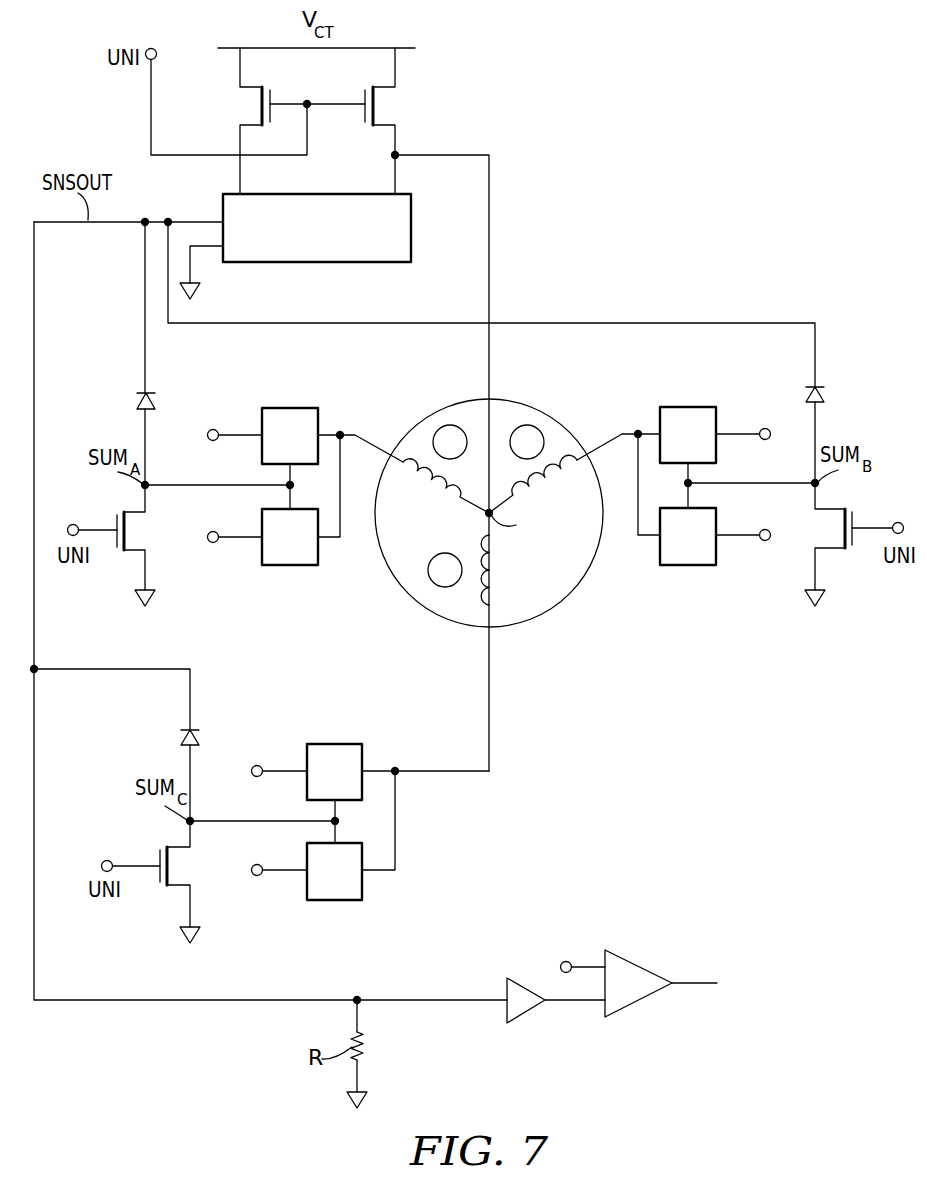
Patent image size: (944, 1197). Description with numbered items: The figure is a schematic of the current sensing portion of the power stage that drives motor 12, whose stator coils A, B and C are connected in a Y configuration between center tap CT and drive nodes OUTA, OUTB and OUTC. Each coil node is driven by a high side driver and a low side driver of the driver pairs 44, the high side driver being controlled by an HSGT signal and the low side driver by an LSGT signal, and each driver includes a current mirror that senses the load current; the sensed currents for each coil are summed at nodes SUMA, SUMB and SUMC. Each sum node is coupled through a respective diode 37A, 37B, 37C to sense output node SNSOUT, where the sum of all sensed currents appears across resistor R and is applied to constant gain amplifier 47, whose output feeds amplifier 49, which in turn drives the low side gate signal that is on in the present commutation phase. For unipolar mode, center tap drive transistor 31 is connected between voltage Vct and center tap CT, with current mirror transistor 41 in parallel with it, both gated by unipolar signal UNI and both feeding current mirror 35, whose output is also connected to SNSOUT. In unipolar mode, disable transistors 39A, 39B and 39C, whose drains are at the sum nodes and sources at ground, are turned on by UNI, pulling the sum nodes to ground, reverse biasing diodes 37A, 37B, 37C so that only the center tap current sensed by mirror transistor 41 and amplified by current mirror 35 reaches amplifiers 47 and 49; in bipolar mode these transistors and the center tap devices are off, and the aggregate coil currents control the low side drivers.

The motor 12 is at (533, 620).
The center tap drive transistor 31 is at (363, 115).
The current mirror 35 is at (411, 229).
The diode 37A is at (137, 400).
The diode 37B is at (823, 392).
The diode 37C is at (182, 741).
The disable transistor 39A is at (115, 512).
The disable transistor 39B is at (853, 521).
The disable transistor 39C is at (158, 856).
The current mirror transistor 41 is at (268, 90).
The high side and low side drivers 44 is at (345, 928).
The constant gain amplifier 47 is at (527, 1025).
The amplifier 49 is at (633, 1010).